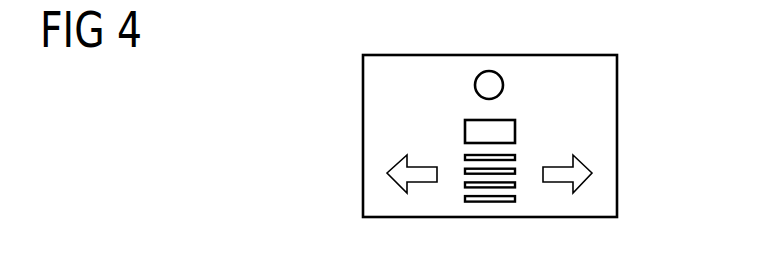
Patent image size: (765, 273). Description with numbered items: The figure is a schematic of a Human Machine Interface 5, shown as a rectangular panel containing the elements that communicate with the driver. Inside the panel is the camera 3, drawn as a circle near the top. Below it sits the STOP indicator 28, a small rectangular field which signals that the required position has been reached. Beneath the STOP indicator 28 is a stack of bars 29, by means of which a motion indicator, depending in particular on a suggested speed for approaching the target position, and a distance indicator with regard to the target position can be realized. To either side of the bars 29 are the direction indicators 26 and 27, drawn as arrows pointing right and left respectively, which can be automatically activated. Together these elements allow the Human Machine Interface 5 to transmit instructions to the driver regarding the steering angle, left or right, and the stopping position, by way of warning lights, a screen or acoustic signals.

The camera 3 is at (503, 85).
The Human Machine Interface 5 is at (363, 75).
The direction indicator 26 is at (592, 173).
The direction indicator 27 is at (387, 173).
The STOP indicator 28 is at (515, 131).
The bars 29 is at (465, 158).